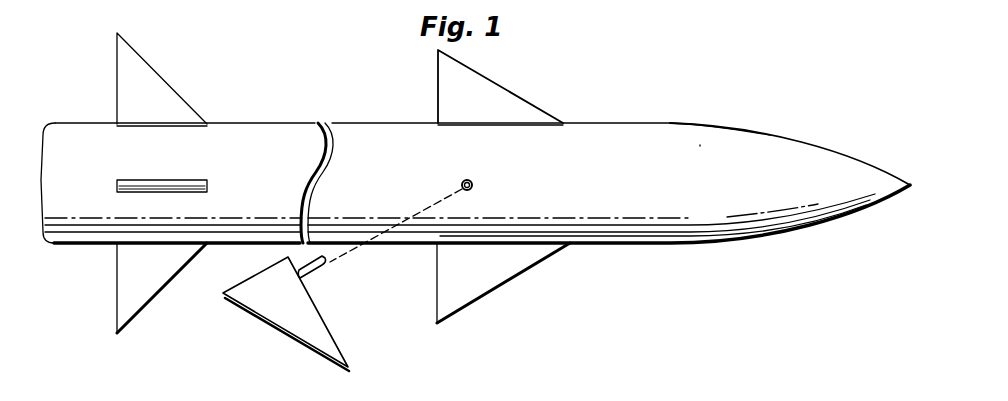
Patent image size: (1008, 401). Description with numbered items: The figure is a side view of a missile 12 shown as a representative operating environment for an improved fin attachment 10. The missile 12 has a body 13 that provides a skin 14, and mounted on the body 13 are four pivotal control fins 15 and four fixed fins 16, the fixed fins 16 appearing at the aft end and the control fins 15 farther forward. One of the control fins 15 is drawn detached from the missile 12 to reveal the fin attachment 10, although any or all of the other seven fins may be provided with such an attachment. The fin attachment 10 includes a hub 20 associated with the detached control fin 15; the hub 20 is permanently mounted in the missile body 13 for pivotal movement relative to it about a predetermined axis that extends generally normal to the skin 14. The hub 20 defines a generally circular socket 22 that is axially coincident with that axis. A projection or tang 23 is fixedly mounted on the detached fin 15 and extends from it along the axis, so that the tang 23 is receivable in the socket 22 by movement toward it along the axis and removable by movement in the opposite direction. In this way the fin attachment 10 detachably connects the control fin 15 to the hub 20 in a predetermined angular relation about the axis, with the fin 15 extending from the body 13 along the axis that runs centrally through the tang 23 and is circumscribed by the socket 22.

The fin attachment 10 is at (328, 265).
The missile 12 is at (802, 87).
The body 13 is at (637, 122).
The skin 14 is at (706, 207).
The pivotal control fins 15 is at (488, 80).
The fixed fins 16 is at (163, 83).
The hub 20 is at (473, 187).
The socket 22 is at (472, 181).
The tang 23 is at (322, 283).